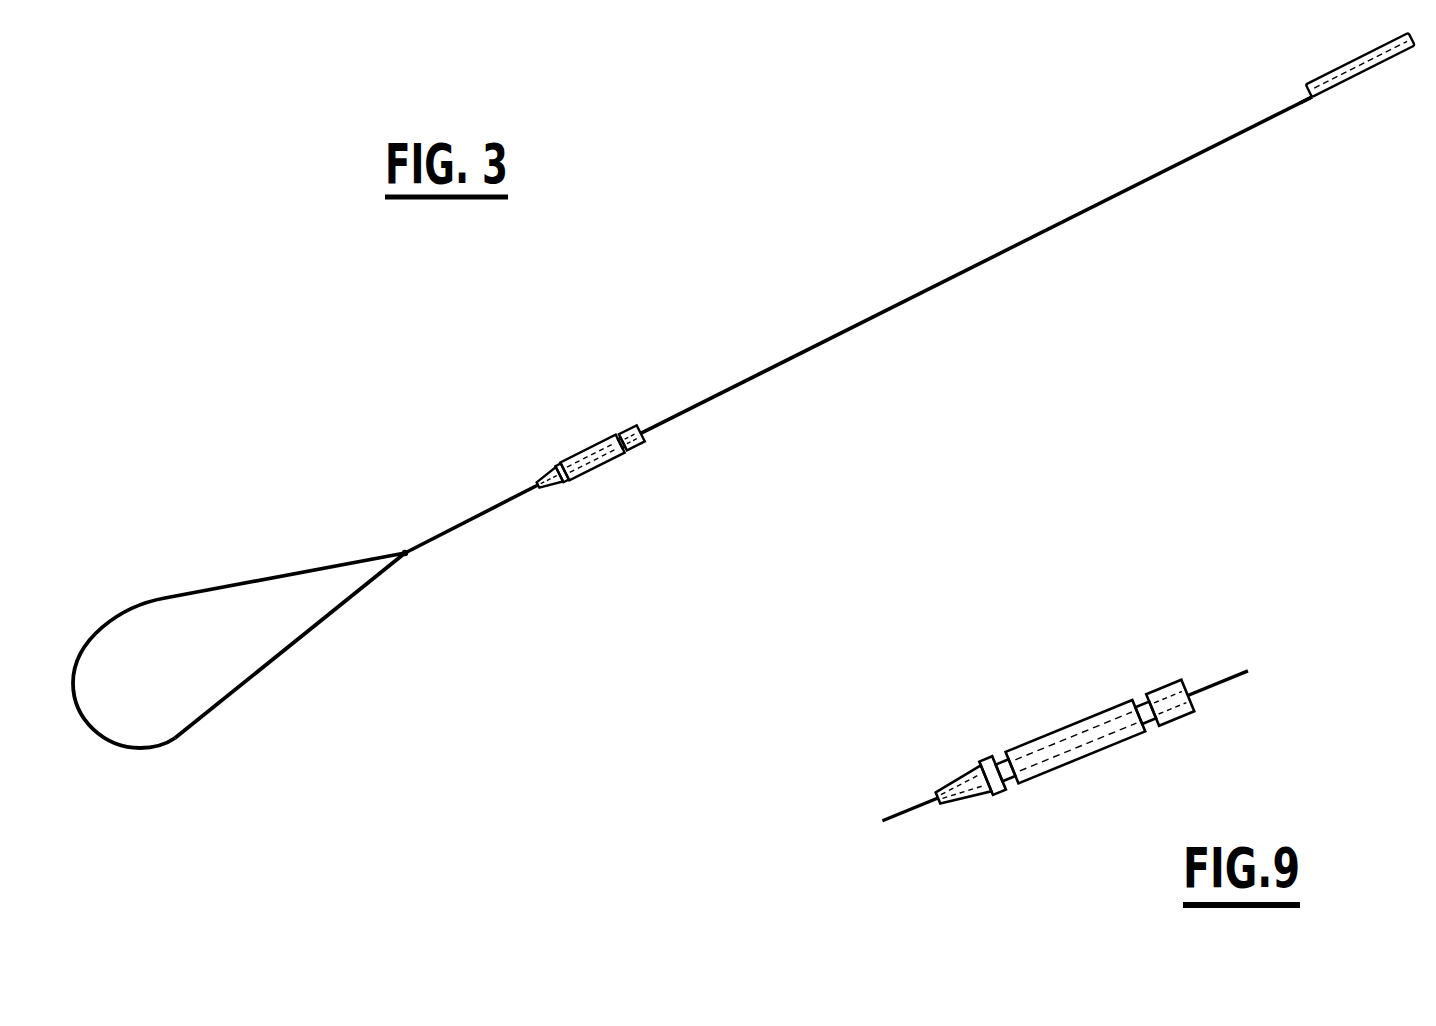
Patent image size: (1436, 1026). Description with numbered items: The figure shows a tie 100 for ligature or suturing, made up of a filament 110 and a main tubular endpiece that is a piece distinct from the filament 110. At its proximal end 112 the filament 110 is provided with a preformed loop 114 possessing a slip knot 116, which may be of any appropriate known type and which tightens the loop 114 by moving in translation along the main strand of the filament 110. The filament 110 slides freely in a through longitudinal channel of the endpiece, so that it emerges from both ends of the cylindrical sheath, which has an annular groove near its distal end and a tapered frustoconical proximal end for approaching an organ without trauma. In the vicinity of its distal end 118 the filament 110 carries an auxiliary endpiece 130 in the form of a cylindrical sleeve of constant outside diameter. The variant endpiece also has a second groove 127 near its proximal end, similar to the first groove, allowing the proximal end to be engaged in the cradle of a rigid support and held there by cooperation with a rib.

In FIG. 3, the tie 100 is at (710, 278).
In FIG. 3, the filament 110 is at (928, 292).
In FIG. 9, the filament 110 is at (910, 813).
In FIG. 3, the proximal end 112 is at (312, 556).
In FIG. 3, the preformed loop 114 is at (263, 686).
In FIG. 3, the slip knot 116 is at (410, 560).
In FIG. 3, the distal end 118 is at (1305, 105).
In FIG. 3, the second annular groove 127 is at (561, 472).
In FIG. 3, the auxiliary endpiece 130 is at (1383, 75).